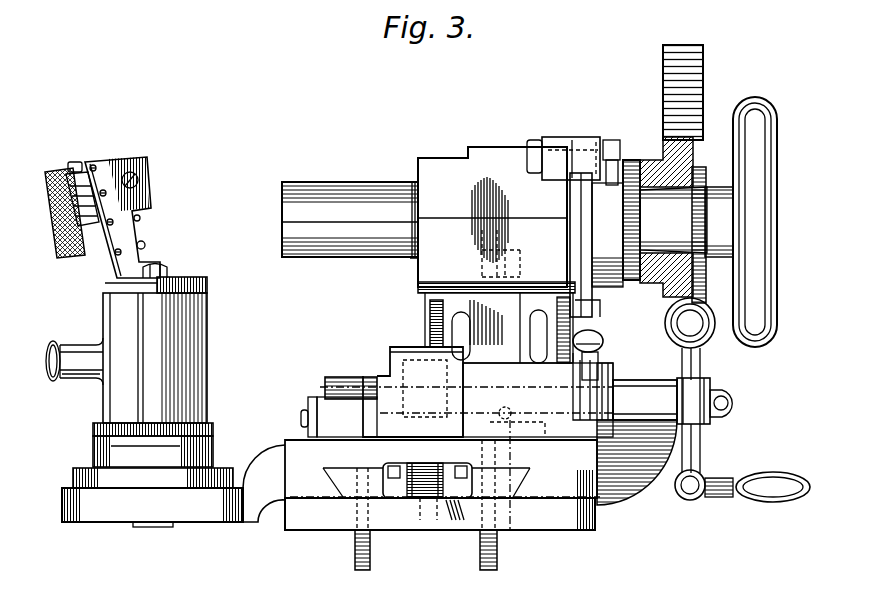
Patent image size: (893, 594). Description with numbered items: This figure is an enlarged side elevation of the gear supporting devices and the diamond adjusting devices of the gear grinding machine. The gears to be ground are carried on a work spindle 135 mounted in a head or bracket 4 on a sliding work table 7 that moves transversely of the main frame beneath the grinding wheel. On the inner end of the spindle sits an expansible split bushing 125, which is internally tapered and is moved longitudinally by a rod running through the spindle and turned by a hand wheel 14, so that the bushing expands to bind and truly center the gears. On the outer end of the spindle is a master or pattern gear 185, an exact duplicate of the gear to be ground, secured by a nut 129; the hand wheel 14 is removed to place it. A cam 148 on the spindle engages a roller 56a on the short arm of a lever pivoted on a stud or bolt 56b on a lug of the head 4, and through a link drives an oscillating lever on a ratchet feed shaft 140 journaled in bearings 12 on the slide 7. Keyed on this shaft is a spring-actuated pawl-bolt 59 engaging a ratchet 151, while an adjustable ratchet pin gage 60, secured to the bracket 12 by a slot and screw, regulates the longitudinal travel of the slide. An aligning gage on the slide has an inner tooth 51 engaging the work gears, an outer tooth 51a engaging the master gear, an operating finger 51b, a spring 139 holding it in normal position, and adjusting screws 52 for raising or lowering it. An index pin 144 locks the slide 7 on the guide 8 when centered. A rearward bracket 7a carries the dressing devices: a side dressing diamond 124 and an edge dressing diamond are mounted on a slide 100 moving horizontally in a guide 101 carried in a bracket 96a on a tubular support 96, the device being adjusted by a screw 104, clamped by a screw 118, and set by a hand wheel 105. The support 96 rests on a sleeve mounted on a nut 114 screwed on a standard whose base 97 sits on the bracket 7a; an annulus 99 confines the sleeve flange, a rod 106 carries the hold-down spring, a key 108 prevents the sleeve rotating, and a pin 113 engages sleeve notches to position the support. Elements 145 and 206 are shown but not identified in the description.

The head or bracket 4 is at (496, 220).
The sliding work table 7 is at (442, 475).
The rearward extension or bracket 7a is at (173, 486).
The guide 8 is at (440, 520).
The bearings 12 is at (645, 400).
The hand wheel 14 is at (748, 226).
The inner tooth 51 is at (350, 376).
The outer tooth 51a is at (305, 418).
The operating finger 51b is at (735, 403).
The adjusting screws 52 is at (430, 322).
The roller 56a is at (617, 150).
The stud or bolt 56b is at (552, 146).
The pawl-bolt 59 is at (601, 341).
The ratchet pin gage 60 is at (612, 373).
The tubular support 96 is at (155, 350).
The bracket 96a is at (110, 238).
The base 97 is at (105, 473).
The annulus 99 is at (208, 432).
The slide 100 is at (146, 157).
The guide 101 is at (146, 200).
The screw 104 is at (103, 150).
The hand wheel 105 is at (78, 250).
The rod 106 is at (158, 268).
The key 108 is at (60, 352).
The pin 113 is at (84, 378).
The nut 114 is at (120, 442).
The screw 118 is at (139, 180).
The side dressing diamond 124 is at (131, 158).
The expansible split bushing 125 is at (333, 183).
The nut 129 is at (706, 178).
The work spindle 135 is at (416, 270).
The spring 139 is at (312, 396).
The ratchet feed shaft 140 is at (703, 380).
The index pin 144 is at (505, 466).
The handle 145 is at (737, 400).
The cam 148 is at (592, 218).
The ratchet 151 is at (625, 437).
The master or pattern gear 185 is at (691, 100).
The ring 206 is at (636, 164).